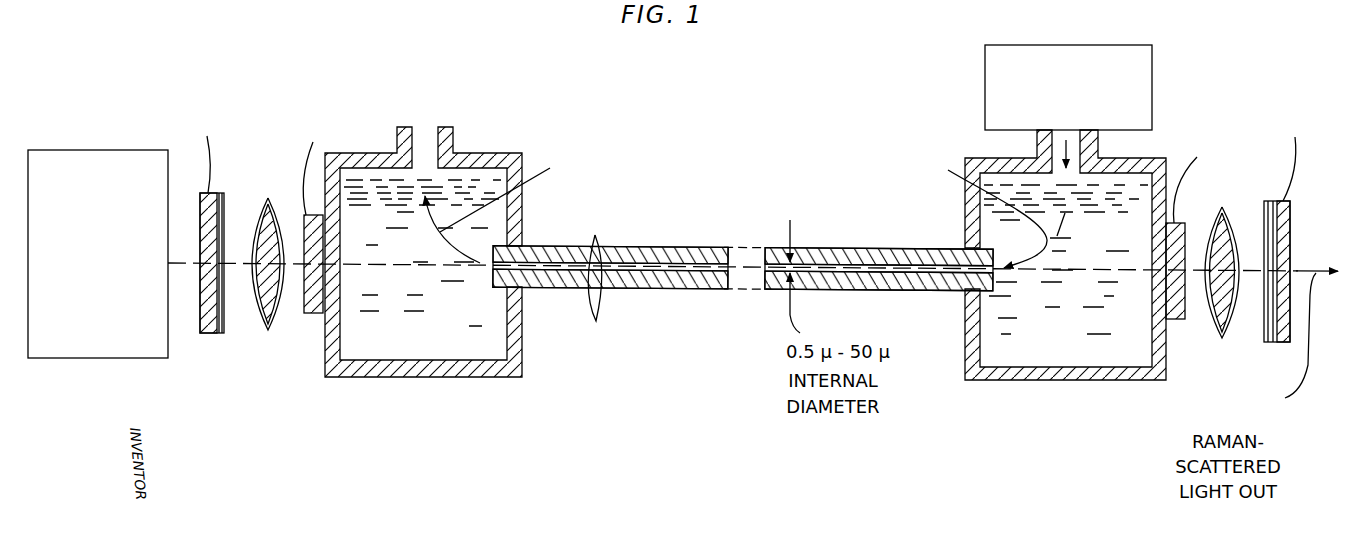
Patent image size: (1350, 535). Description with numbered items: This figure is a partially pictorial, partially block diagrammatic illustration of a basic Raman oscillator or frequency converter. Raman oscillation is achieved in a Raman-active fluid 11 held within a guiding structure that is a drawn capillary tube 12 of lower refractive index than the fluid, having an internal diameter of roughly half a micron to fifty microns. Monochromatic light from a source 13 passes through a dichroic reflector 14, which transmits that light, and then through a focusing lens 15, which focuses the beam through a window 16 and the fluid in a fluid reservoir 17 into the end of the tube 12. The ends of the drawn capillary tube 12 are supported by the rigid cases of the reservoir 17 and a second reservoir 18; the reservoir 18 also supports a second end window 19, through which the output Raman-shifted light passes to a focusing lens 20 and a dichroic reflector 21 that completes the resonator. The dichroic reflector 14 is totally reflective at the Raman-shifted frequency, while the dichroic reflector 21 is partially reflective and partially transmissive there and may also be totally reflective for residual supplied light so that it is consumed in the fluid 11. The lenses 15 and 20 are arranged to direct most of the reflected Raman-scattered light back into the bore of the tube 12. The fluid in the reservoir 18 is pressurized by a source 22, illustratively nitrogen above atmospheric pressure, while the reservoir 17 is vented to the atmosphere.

The Raman-active fluid 11 is at (682, 263).
The drawn capillary tube 12 is at (743, 320).
The source 13 is at (78, 150).
The dichroic reflector 14 is at (212, 333).
The focusing lens 15 is at (269, 322).
The window 16 is at (313, 313).
The fluid reservoir 17 is at (420, 350).
The reservoir 18 is at (1060, 357).
The second end window 19 is at (1172, 322).
The focusing lens 20 is at (1220, 316).
The dichroic reflector 21 is at (1280, 337).
The source 22 is at (985, 72).